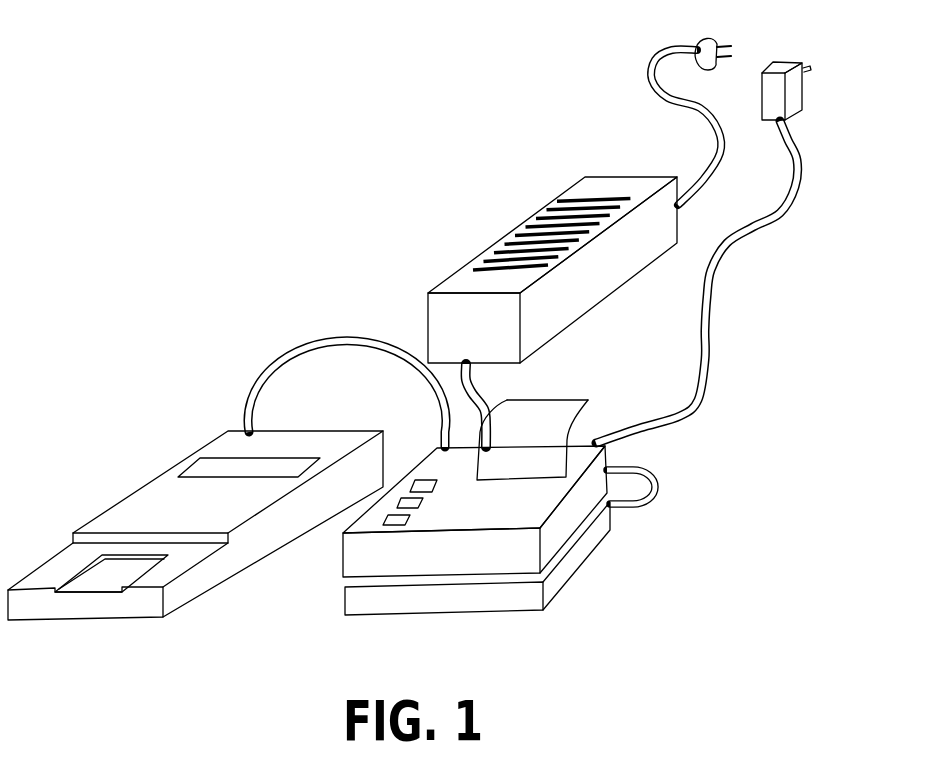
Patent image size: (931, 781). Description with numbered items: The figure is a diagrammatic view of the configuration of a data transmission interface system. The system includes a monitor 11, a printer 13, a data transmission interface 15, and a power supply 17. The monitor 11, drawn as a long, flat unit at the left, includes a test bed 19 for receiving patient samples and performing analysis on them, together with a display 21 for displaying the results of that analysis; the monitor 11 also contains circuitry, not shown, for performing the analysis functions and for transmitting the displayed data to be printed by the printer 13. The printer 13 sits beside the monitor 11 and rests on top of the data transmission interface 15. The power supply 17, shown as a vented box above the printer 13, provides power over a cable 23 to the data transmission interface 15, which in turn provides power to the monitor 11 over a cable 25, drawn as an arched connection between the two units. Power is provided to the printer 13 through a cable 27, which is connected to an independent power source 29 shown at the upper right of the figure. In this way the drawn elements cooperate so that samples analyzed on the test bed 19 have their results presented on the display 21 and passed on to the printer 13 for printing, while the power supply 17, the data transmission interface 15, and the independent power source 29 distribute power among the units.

The monitor 11 is at (125, 500).
The printer 13 is at (342, 562).
The data transmission interface 15 is at (510, 598).
The power supply 17 is at (447, 280).
The test bed 19 is at (140, 573).
The display 21 is at (203, 470).
The cable 23 is at (480, 400).
The cable 25 is at (302, 362).
The cable 27 is at (712, 305).
The independent power source 29 is at (805, 92).